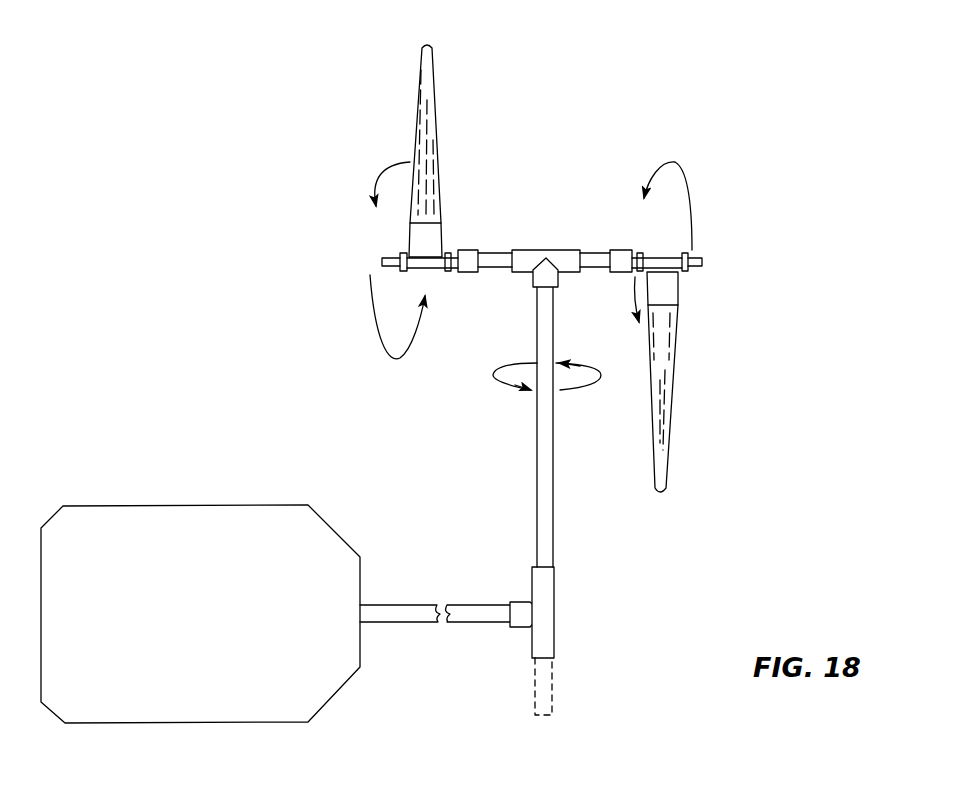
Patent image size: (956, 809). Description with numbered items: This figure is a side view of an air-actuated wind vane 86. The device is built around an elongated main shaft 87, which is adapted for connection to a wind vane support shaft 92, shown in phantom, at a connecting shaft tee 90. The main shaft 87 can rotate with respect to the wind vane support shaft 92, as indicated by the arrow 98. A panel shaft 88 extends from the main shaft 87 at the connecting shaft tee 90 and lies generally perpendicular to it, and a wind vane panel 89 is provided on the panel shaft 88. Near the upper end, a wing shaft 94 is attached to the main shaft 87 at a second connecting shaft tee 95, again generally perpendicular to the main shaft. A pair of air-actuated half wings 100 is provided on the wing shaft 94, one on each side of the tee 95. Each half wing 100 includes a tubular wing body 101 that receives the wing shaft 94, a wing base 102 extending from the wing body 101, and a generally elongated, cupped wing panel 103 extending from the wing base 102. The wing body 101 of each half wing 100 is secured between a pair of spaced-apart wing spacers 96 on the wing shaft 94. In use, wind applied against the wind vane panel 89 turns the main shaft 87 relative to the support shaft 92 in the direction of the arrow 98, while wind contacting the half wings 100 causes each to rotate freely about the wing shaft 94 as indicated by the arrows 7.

The arrows 7 is at (378, 338).
The air-actuated wind vane 86 is at (740, 74).
The main shaft 87 is at (540, 437).
The panel shaft 88 is at (460, 617).
The wind vane panel 89 is at (221, 515).
The connecting shaft tee 90 is at (548, 597).
The wind vane support shaft 92 is at (540, 686).
The wing shaft 94 is at (493, 256).
The connecting shaft tee 95 is at (562, 256).
The wing spacers 96 is at (428, 268).
The arrow 98 is at (497, 382).
The air-actuated half wing 100 is at (561, 268).
The tubular wing body 101 is at (441, 85).
The wing base 102 is at (422, 236).
The wing panel 103 is at (438, 122).